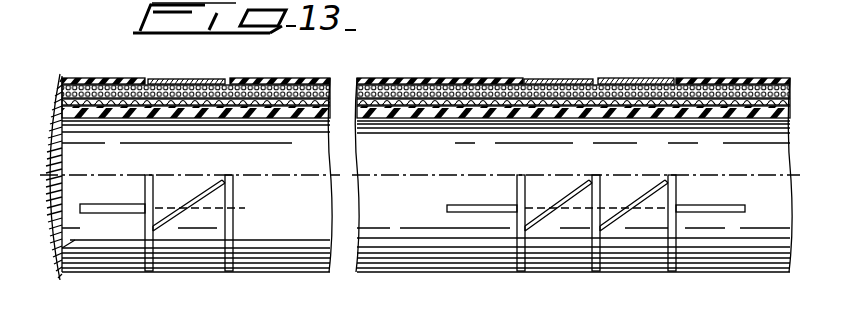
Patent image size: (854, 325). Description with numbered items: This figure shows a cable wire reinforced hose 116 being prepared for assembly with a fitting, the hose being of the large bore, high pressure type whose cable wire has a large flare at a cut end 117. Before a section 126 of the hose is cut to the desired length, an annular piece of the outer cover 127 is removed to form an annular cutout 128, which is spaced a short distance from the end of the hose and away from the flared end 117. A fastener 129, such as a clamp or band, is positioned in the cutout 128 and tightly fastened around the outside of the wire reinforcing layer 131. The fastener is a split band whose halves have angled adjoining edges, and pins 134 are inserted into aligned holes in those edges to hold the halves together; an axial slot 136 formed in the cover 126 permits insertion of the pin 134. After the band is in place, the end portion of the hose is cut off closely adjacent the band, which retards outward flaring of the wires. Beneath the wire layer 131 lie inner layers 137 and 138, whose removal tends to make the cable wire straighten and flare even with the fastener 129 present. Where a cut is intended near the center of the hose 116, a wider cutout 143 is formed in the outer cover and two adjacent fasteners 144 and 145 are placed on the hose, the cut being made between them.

The cable wire reinforced hose 116 is at (576, 141).
The cut end 117 is at (55, 272).
The section of the hose 126 is at (307, 78).
The outer cover 127 is at (100, 78).
The annular cutout 128 is at (148, 80).
The fastener 129 is at (178, 272).
The wire reinforcing layer 131 is at (415, 80).
The pin 134 is at (252, 206).
The axial slot 136 is at (135, 213).
The inner layer 137 is at (385, 104).
The inner layer 138 is at (437, 112).
The wider cutout 143 is at (668, 78).
The fastener 144 is at (548, 78).
The fastener 145 is at (620, 78).